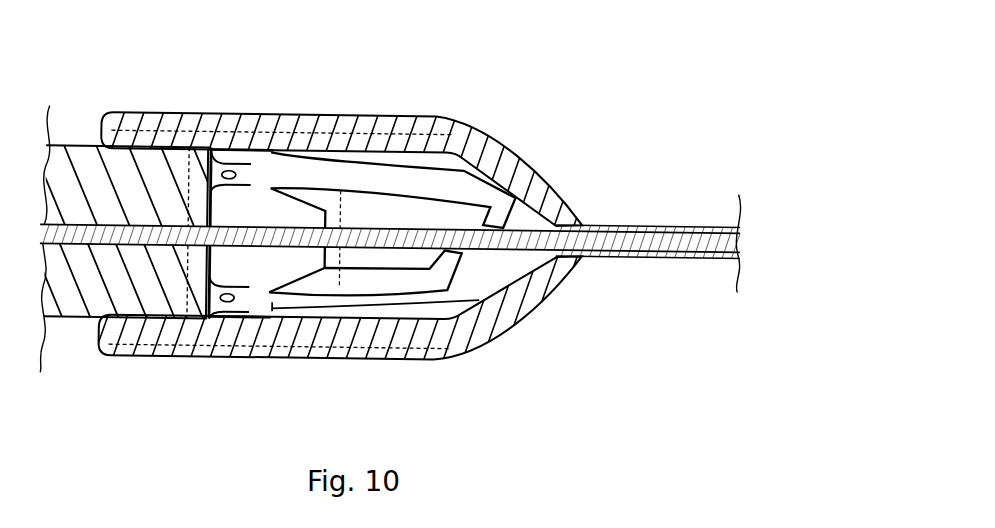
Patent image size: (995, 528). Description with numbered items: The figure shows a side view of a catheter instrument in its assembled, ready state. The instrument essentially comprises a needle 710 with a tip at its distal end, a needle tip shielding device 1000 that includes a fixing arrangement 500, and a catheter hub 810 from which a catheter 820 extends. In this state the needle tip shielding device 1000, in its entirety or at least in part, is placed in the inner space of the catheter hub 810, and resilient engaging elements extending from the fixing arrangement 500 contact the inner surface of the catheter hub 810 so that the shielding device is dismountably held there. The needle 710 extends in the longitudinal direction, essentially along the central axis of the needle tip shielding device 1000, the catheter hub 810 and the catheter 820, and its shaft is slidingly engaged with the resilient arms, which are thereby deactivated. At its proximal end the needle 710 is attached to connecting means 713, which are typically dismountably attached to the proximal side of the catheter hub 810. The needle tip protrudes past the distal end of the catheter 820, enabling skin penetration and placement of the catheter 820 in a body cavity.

The fixing arrangement 500 is at (252, 130).
The connecting means 713 is at (73, 145).
The catheter hub 810 is at (368, 110).
The catheter 820 is at (643, 221).
The needle 710 is at (410, 225).
The needle tip shielding device 1000 is at (358, 297).